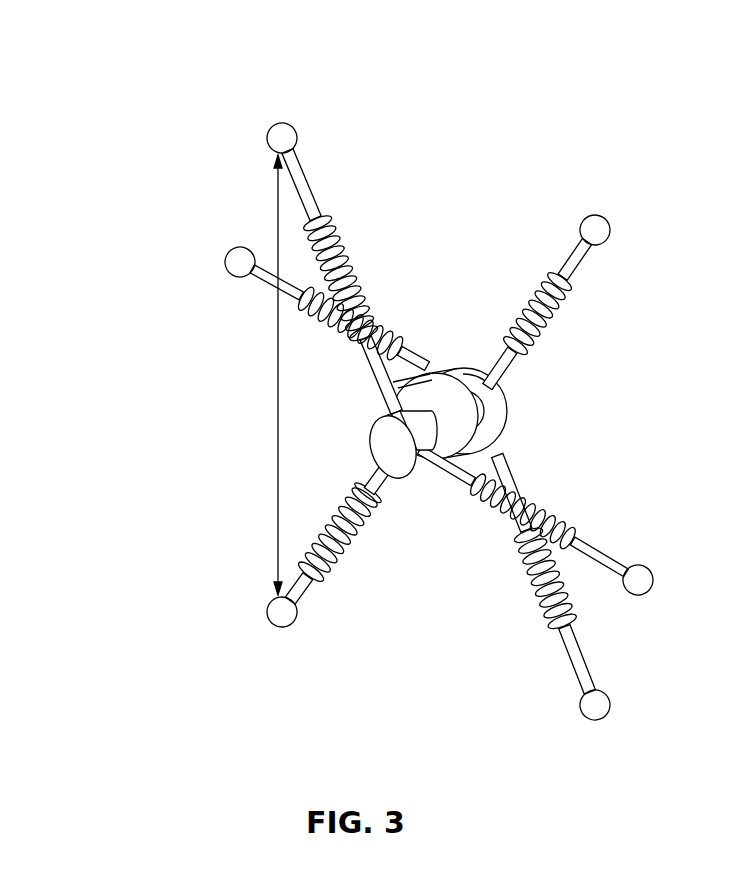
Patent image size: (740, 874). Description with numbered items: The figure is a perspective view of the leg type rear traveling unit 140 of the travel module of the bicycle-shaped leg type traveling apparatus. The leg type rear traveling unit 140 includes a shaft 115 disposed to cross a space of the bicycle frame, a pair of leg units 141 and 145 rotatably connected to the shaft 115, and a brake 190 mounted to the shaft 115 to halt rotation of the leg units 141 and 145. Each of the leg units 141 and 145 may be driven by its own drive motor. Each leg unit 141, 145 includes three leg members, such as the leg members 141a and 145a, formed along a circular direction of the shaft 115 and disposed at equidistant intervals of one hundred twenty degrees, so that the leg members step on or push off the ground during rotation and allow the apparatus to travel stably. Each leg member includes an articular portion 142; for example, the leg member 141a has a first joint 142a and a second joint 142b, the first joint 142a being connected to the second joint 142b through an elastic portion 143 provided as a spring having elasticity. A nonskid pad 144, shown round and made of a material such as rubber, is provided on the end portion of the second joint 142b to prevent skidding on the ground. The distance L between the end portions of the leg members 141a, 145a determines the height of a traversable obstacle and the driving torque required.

The leg type rear traveling unit 140 is at (465, 52).
The leg unit 141 is at (348, 426).
The leg member 141a is at (350, 572).
The articular portion 142 is at (268, 568).
The first joint 142a is at (376, 473).
The second joint 142b is at (293, 590).
The elastic portion 143 is at (370, 510).
The nonskid pad 144 is at (277, 628).
The leg unit 145 is at (470, 356).
The leg member 145a is at (528, 614).
The shaft 115 is at (490, 399).
The brake 190 is at (499, 458).